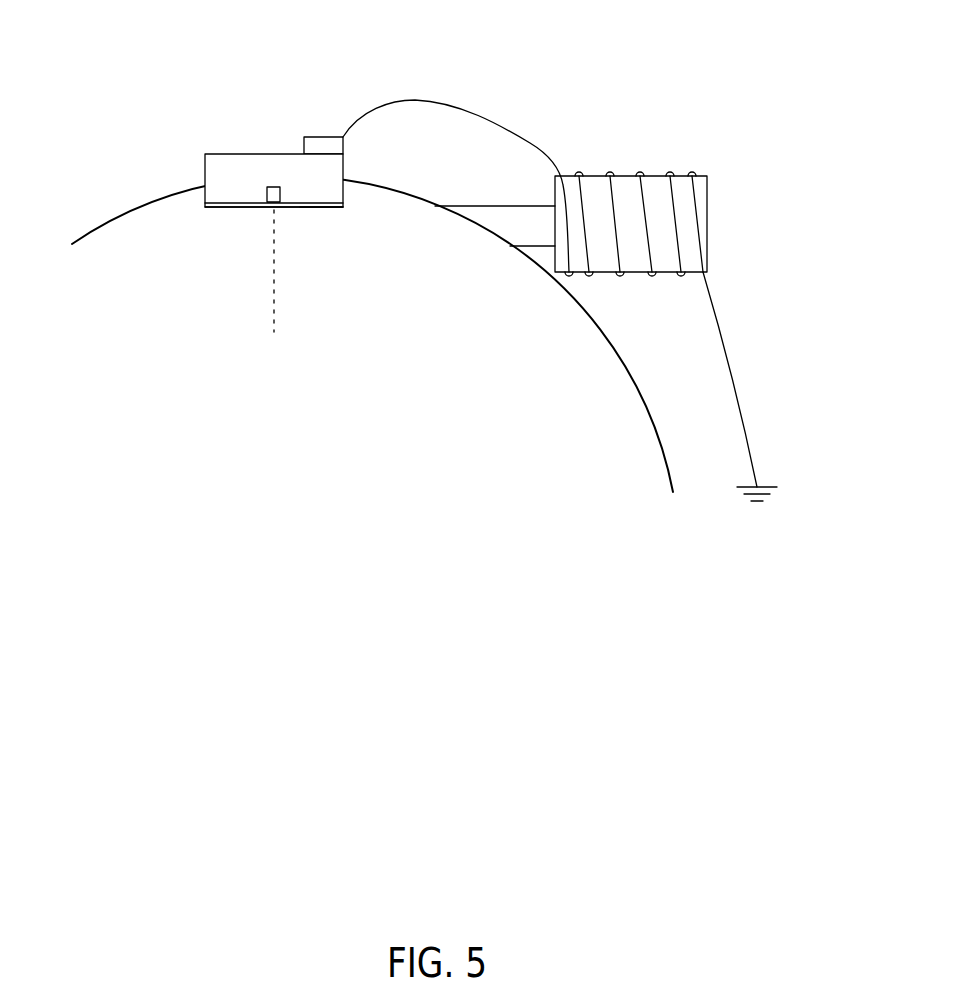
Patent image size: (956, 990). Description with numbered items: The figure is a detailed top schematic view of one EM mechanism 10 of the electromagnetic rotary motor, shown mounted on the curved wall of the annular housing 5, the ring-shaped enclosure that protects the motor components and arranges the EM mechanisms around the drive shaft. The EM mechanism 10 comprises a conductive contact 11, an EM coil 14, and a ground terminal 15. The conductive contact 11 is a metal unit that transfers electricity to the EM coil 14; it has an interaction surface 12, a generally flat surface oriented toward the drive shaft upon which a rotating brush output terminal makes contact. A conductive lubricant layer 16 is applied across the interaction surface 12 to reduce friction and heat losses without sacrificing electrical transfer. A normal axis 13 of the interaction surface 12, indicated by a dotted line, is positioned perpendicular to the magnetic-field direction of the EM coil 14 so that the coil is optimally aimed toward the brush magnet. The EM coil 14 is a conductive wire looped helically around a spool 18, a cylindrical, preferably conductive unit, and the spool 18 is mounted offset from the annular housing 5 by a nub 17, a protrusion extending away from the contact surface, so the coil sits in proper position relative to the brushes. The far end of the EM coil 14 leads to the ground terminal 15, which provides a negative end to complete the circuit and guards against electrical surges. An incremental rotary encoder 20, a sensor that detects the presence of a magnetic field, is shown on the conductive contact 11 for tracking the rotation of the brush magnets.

The annular housing 5 is at (652, 418).
The EM mechanism 10 is at (315, 84).
The conductive contact 11 is at (233, 178).
The interaction surface 12 is at (263, 207).
The normal axis 13 is at (274, 304).
The EM coil 14 is at (641, 176).
The ground terminal 15 is at (755, 502).
The conductive lubricant layer 16 is at (318, 207).
The nub 17 is at (537, 233).
The spool 18 is at (690, 217).
The incremental rotary encoder 20 is at (277, 188).